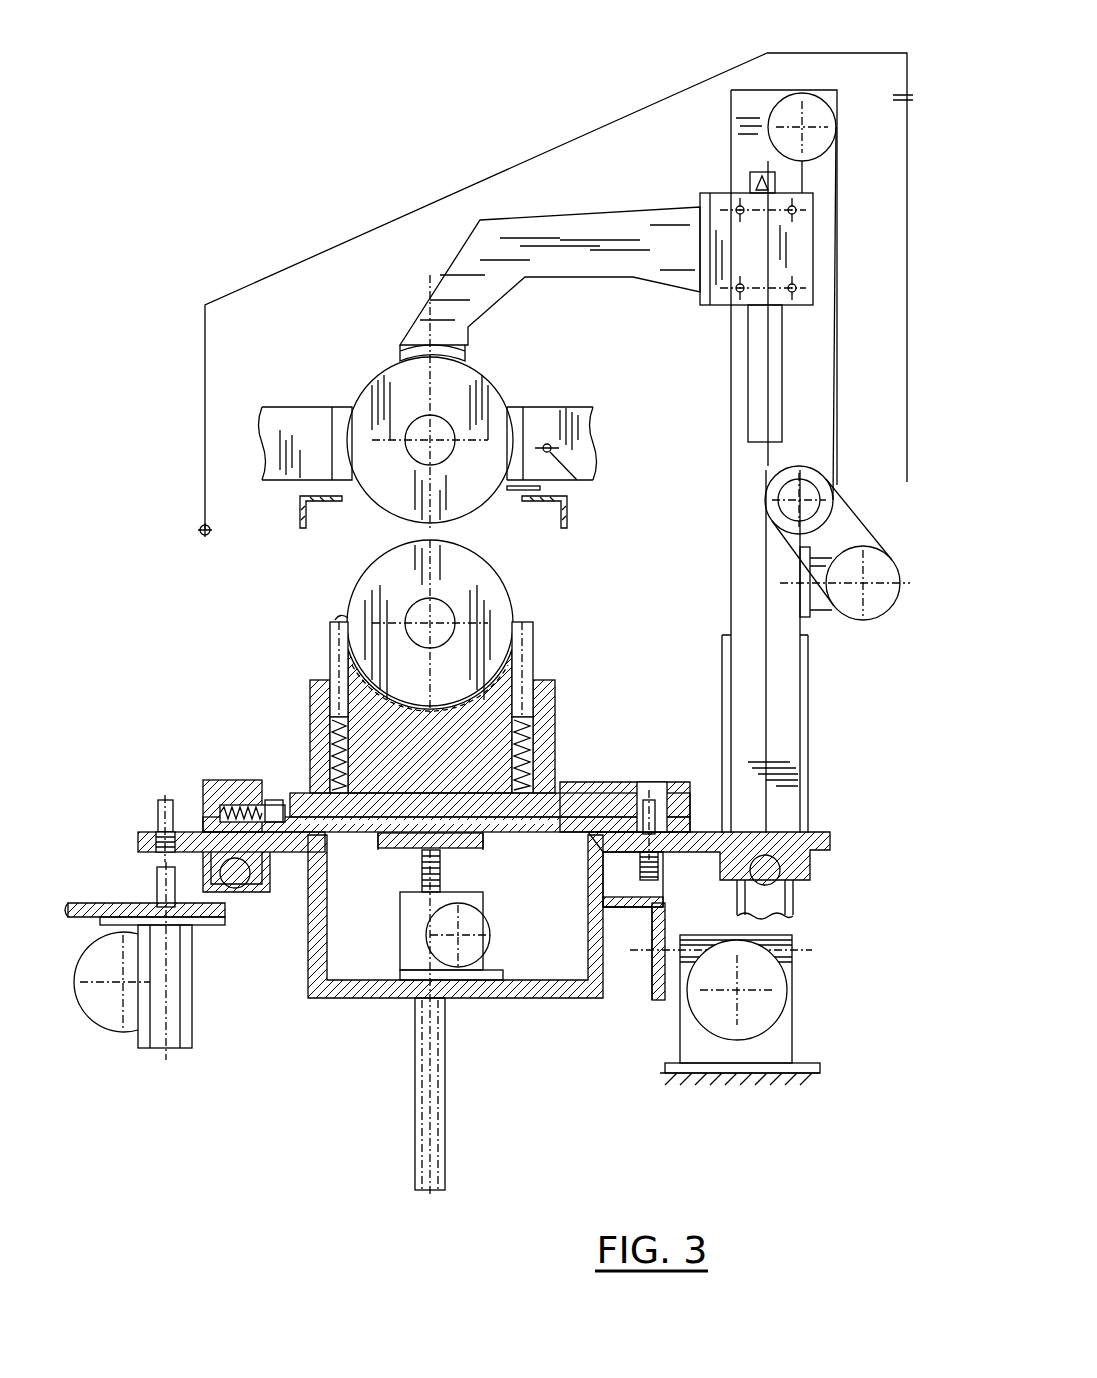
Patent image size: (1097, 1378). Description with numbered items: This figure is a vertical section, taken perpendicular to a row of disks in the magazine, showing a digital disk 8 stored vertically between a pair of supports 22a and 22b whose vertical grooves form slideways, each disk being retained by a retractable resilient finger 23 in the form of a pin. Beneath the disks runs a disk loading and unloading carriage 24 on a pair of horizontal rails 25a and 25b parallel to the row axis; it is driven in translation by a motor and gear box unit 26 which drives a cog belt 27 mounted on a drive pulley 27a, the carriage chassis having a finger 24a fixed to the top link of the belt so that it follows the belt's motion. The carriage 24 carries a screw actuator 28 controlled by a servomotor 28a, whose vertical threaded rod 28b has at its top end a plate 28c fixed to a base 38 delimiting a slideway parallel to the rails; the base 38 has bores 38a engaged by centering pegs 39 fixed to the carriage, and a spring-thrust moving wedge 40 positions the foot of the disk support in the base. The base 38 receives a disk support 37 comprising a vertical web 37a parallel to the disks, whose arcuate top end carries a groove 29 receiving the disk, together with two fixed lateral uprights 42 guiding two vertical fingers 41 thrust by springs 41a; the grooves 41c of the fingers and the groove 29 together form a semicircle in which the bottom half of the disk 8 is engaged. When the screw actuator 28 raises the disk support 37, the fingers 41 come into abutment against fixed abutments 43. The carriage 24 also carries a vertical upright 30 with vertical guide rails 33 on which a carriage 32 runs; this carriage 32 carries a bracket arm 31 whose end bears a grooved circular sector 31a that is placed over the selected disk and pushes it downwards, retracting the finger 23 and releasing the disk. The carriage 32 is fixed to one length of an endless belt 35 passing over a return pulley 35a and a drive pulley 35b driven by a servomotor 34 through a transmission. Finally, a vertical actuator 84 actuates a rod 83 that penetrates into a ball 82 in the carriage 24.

The digital disk 8 is at (400, 390).
The support 22a is at (337, 407).
The support 22b is at (525, 407).
The retractable resilient finger 23 is at (515, 492).
The disk loading and unloading carriage 24 is at (345, 1000).
The finger 24a is at (640, 892).
The horizontal rail 25a is at (795, 893).
The horizontal rail 25b is at (243, 890).
The motor and gear box unit 26 is at (722, 1045).
The cog belt 27 is at (655, 1000).
The drive pulley 27a is at (650, 965).
The screw actuator 28 is at (485, 905).
The servomotor 28a is at (480, 928).
The threaded rod 28b is at (450, 862).
The plate 28c is at (375, 850).
The groove 29 is at (350, 735).
The vertical upright 30 is at (795, 720).
The bracket arm 31 is at (577, 232).
The circular sector 31a is at (420, 340).
The carriage 32 is at (810, 252).
The vertical guide rail 33 is at (755, 428).
The servomotor 34 is at (878, 605).
The endless belt 35 is at (838, 400).
The return pulley 35a is at (797, 100).
The drive pulley 35b is at (815, 490).
The disk support 37 is at (568, 724).
The vertical web 37a is at (465, 722).
The base 38 is at (612, 790).
The bore 38a is at (643, 790).
The centering peg 39 is at (652, 800).
The moving wedge 40 is at (268, 793).
The vertical finger 41 is at (333, 645).
The spring 41a is at (345, 750).
The groove 41c is at (343, 622).
The fixed lateral upright 42 is at (315, 688).
The fixed abutment 43 is at (302, 520).
The ball 82 is at (160, 822).
The rod 83 is at (160, 882).
The vertical actuator 84 is at (155, 1037).